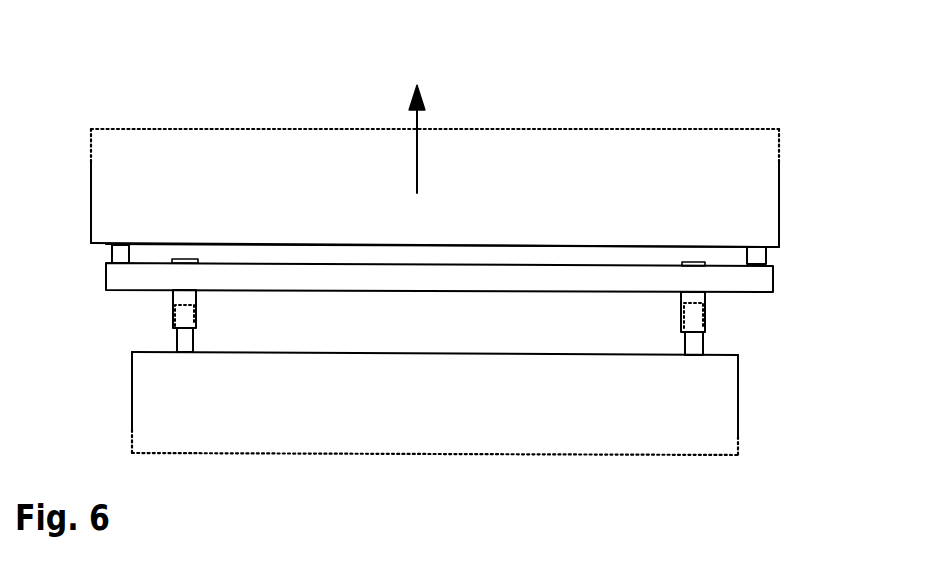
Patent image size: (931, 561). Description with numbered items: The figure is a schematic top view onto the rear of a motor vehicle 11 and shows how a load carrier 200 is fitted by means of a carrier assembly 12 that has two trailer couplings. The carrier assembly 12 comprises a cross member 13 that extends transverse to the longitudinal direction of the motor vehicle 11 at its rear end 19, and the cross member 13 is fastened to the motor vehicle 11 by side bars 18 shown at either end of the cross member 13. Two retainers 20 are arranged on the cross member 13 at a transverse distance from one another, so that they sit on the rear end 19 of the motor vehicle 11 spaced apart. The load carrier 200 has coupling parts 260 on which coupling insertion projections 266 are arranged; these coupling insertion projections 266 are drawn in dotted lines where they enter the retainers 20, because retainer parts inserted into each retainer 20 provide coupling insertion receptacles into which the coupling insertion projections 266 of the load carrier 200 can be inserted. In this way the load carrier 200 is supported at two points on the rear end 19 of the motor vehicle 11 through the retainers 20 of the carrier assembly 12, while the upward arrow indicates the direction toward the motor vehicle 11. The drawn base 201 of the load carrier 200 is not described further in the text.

The motor vehicle 11 is at (678, 135).
The carrier assembly 12 is at (444, 300).
The cross member 13 is at (340, 283).
The side bars 18 is at (112, 251).
The rear end 19 is at (483, 245).
The retainers 20 is at (194, 298).
The load carrier 200 is at (453, 432).
The base 201 is at (145, 395).
The coupling parts 260 is at (183, 338).
The coupling insertion projections 266 is at (192, 320).